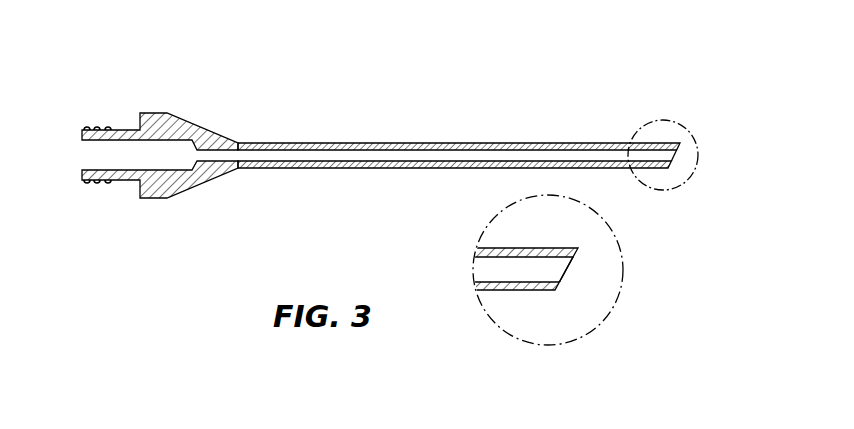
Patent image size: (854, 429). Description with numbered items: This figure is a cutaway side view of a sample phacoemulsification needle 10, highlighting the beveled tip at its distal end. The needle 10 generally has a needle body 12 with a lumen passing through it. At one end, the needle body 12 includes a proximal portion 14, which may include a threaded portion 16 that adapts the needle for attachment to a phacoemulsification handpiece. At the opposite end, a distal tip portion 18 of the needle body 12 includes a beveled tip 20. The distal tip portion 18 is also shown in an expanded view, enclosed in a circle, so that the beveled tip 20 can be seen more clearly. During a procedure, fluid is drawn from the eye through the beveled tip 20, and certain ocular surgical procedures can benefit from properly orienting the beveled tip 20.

The phacoemulsification needle 10 is at (482, 81).
The needle body 12 is at (379, 173).
The proximal portion 14 is at (159, 212).
The threaded portion 16 is at (107, 121).
The distal tip portion 18 is at (669, 117).
The beveled tip 20 is at (570, 270).